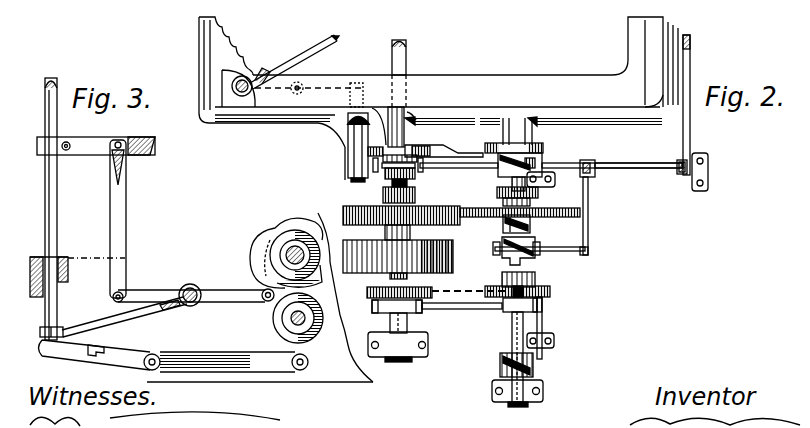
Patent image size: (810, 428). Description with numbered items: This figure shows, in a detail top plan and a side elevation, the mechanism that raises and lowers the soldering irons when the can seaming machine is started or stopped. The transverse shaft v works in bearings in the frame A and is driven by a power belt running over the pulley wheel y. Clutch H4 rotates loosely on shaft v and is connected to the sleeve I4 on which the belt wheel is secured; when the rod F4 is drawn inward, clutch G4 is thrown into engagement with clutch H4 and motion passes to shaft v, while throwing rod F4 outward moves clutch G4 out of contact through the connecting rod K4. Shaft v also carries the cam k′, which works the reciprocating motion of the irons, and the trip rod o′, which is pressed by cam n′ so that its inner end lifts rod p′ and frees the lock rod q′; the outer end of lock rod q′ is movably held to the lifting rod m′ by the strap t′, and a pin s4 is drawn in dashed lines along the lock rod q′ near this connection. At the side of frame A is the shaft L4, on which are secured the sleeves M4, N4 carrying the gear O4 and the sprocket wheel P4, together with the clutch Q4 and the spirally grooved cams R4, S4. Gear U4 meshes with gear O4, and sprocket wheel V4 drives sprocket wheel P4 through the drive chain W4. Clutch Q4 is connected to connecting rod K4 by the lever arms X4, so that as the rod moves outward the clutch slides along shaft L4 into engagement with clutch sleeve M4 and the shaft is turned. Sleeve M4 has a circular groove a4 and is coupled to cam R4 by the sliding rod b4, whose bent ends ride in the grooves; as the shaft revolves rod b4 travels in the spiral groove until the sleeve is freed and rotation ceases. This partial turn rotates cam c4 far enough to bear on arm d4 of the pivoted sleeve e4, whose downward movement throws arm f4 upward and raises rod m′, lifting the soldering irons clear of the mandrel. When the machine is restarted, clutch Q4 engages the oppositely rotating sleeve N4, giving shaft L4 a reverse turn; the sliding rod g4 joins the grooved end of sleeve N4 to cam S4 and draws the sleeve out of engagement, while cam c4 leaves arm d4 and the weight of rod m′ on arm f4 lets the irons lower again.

In FIG. 2, the frame A is at (483, 88).
In FIG. 3, the frame A is at (185, 266).
In FIG. 2, the rod F4 is at (690, 127).
In FIG. 2, the strap t′ is at (232, 85).
In FIG. 3, the strap t′ is at (44, 123).
In FIG. 2, the lifting rod m′ is at (238, 97).
In FIG. 3, the lifting rod m′ is at (57, 212).
In FIG. 2, the lock rod q′ is at (282, 78).
In FIG. 3, the lock rod q′ is at (140, 152).
In FIG. 2, the pin s4 is at (303, 85).
In FIG. 2, the transverse shaft v is at (406, 55).
In FIG. 3, the transverse shaft v is at (199, 287).
In FIG. 2, the pivoted sleeve e4 is at (348, 128).
In FIG. 3, the pivoted sleeve e4 is at (165, 352).
In FIG. 2, the cam k′ is at (423, 150).
In FIG. 2, the arm d is at (458, 145).
In FIG. 2, the gear U4 is at (345, 208).
In FIG. 2, the clutch G4 is at (413, 178).
In FIG. 2, the clutch H4 is at (385, 195).
In FIG. 2, the sleeve I4 is at (410, 203).
In FIG. 2, the pulley wheel y is at (453, 263).
In FIG. 2, the sprocket wheel V4 is at (352, 289).
In FIG. 2, the drive chain W4 is at (463, 298).
In FIG. 2, the cam c4 is at (543, 143).
In FIG. 3, the cam c4 is at (312, 338).
In FIG. 2, the spirally grooved cam R4 is at (547, 168).
In FIG. 2, the connecting rod K4 is at (610, 172).
In FIG. 2, the lever arms X4 is at (588, 176).
In FIG. 2, the circular groove a4 is at (503, 197).
In FIG. 2, the sliding rod b4 is at (540, 195).
In FIG. 2, the sleeve M4 is at (530, 223).
In FIG. 2, the sleeve N4 is at (535, 278).
In FIG. 2, the clutch Q4 is at (536, 257).
In FIG. 2, the gear O4 is at (577, 212).
In FIG. 2, the sprocket wheel P4 is at (548, 293).
In FIG. 2, the shaft L4 is at (513, 328).
In FIG. 2, the sliding rod g4 is at (543, 323).
In FIG. 2, the spirally grooved cam S4 is at (500, 362).
In FIG. 3, the rod p′ is at (126, 228).
In FIG. 3, the trip rod o′ is at (150, 292).
In FIG. 3, the arm f4 is at (121, 358).
In FIG. 3, the arm d4 is at (258, 364).
In FIG. 3, the cam n′ is at (330, 230).